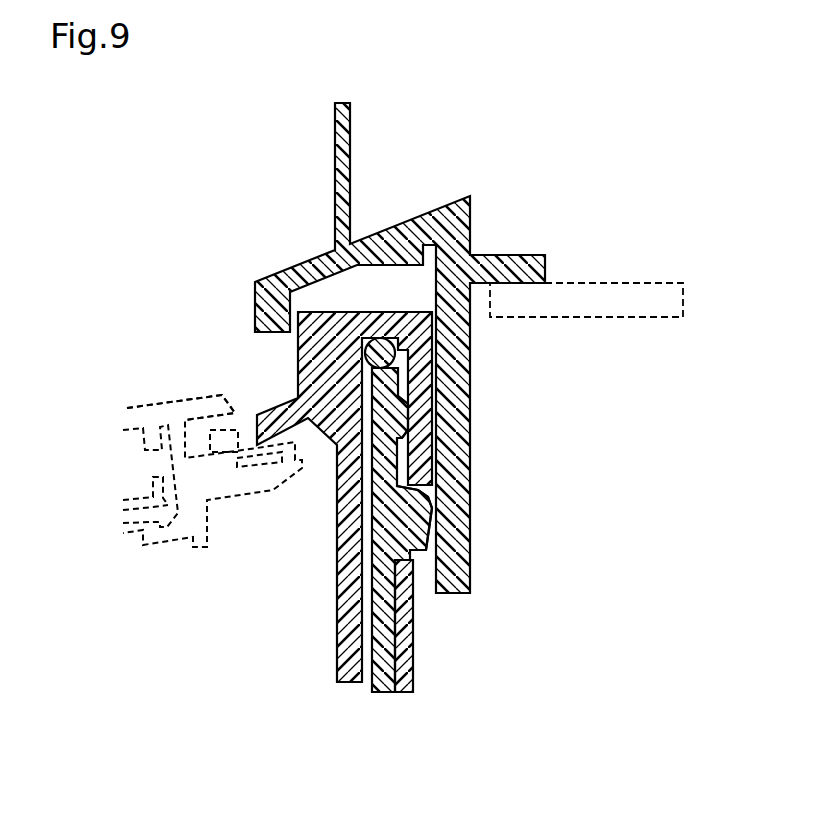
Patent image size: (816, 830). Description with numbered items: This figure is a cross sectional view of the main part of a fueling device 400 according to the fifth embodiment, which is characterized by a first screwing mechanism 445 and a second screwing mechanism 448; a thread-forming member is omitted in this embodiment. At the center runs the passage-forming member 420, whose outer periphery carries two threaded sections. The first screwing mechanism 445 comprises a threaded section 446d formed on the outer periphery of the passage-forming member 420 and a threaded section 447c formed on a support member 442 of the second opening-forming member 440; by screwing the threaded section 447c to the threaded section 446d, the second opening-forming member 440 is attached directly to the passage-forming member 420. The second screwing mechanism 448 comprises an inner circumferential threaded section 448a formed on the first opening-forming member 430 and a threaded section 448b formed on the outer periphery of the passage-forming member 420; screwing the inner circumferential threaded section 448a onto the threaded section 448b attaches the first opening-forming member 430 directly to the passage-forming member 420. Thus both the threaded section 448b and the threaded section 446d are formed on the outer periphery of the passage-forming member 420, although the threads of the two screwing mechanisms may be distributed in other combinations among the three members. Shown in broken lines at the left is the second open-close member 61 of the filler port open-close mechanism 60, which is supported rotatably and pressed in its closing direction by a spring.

The fueling device 400 is at (440, 190).
The first opening-forming member 430 is at (470, 214).
The second opening-forming member 440 is at (298, 365).
The support member 442 is at (421, 343).
The passage-forming member 420 is at (394, 693).
The first screwing mechanism 445 is at (576, 372).
The threaded section 447c is at (400, 411).
The threaded section 446d is at (404, 440).
The second screwing mechanism 448 is at (576, 508).
The inner circumferential threaded section 448a is at (427, 518).
The threaded section 448b is at (430, 556).
The second open-close member 61 is at (123, 419).
The filler port open-close mechanism 60 is at (140, 433).